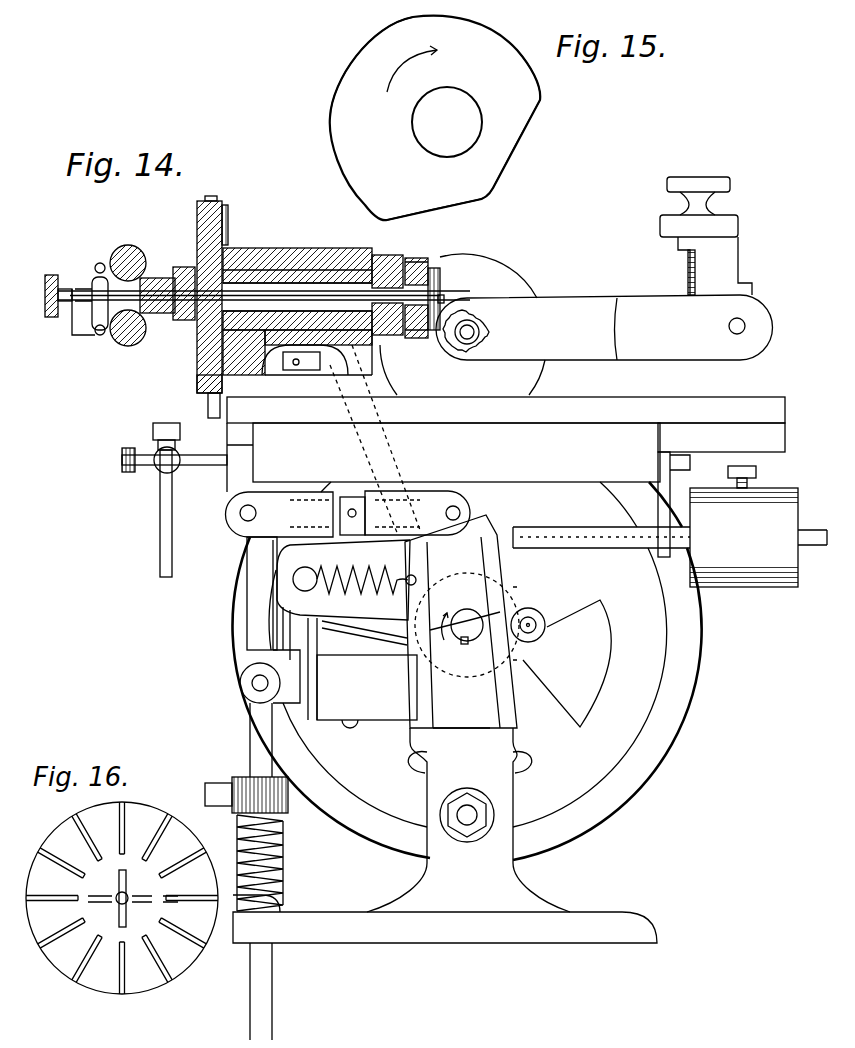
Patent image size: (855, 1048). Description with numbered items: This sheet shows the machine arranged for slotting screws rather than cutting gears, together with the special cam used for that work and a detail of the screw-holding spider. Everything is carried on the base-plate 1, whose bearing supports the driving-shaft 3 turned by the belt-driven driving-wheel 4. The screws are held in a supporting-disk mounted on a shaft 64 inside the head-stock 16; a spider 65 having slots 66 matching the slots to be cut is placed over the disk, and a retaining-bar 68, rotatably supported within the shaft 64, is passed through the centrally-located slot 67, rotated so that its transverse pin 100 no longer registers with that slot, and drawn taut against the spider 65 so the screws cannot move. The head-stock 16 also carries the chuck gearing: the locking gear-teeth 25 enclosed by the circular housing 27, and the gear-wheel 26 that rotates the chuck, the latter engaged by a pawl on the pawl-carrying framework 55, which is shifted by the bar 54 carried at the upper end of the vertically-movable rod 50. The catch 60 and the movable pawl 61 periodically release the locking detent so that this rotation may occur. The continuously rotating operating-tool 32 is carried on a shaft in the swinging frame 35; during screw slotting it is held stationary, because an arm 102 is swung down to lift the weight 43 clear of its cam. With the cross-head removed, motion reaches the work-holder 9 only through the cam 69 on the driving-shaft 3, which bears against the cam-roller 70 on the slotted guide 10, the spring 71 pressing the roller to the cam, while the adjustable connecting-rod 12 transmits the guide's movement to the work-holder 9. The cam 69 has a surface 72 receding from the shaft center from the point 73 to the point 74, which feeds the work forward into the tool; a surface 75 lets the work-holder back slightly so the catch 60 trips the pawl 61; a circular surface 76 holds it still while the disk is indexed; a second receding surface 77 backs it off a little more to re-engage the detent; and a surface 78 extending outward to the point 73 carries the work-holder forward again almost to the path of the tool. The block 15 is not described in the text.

In FIG. 14, the base-plate 1 is at (445, 835).
In FIG. 14, the driving-shaft 3 is at (466, 632).
In FIG. 14, the driving-wheel 4 is at (640, 766).
In FIG. 14, the work-holder 9 is at (765, 402).
In FIG. 14, the slotted guide 10 is at (515, 655).
In FIG. 14, the adjustable connecting-rod 12 is at (236, 520).
In FIG. 14, the slide block 15 is at (456, 452).
In FIG. 14, the head-stock 16 is at (305, 253).
In FIG. 14, the gear-teeth 25 is at (226, 205).
In FIG. 14, the gear-wheel 26 is at (198, 383).
In FIG. 14, the circular shell or housing 27 is at (228, 228).
In FIG. 14, the operating-tool 32 is at (492, 333).
In FIG. 14, the swinging frame 35 is at (604, 327).
In FIG. 14, the weight 43 is at (744, 526).
In FIG. 14, the vertically-movable rod 50 is at (250, 737).
In FIG. 14, the bar 54 is at (522, 386).
In FIG. 14, the pawl-carrying framework 55 is at (85, 325).
In FIG. 14, the catch 60 is at (212, 413).
In FIG. 14, the movable pawl 61 is at (167, 423).
In FIG. 14, the shaft 64 is at (394, 283).
In FIG. 14, the spider 65 is at (420, 262).
In FIG. 16, the spider 65 is at (150, 820).
In FIG. 14, the slots 66 is at (430, 262).
In FIG. 16, the slots 66 is at (70, 978).
In FIG. 14, the centrally-located slot 67 is at (440, 294).
In FIG. 16, the centrally-located slot 67 is at (125, 897).
In FIG. 14, the retaining-bar 68 is at (175, 300).
In FIG. 14, the cam 69 is at (424, 511).
In FIG. 15, the cam 69 is at (435, 118).
In FIG. 14, the cam-roller 70 is at (546, 628).
In FIG. 14, the spring 71 is at (340, 590).
In FIG. 15, the cam surface 72 is at (360, 52).
In FIG. 15, the point 73 is at (540, 92).
In FIG. 15, the point 74 is at (383, 224).
In FIG. 15, the cam surface 75 is at (400, 215).
In FIG. 15, the circular surface 76 is at (478, 203).
In FIG. 15, the second receding surface 77 is at (500, 172).
In FIG. 15, the cam surface 78 is at (530, 125).
In FIG. 14, the transverse pin 100 is at (444, 300).
In FIG. 14, the arm 102 is at (672, 503).